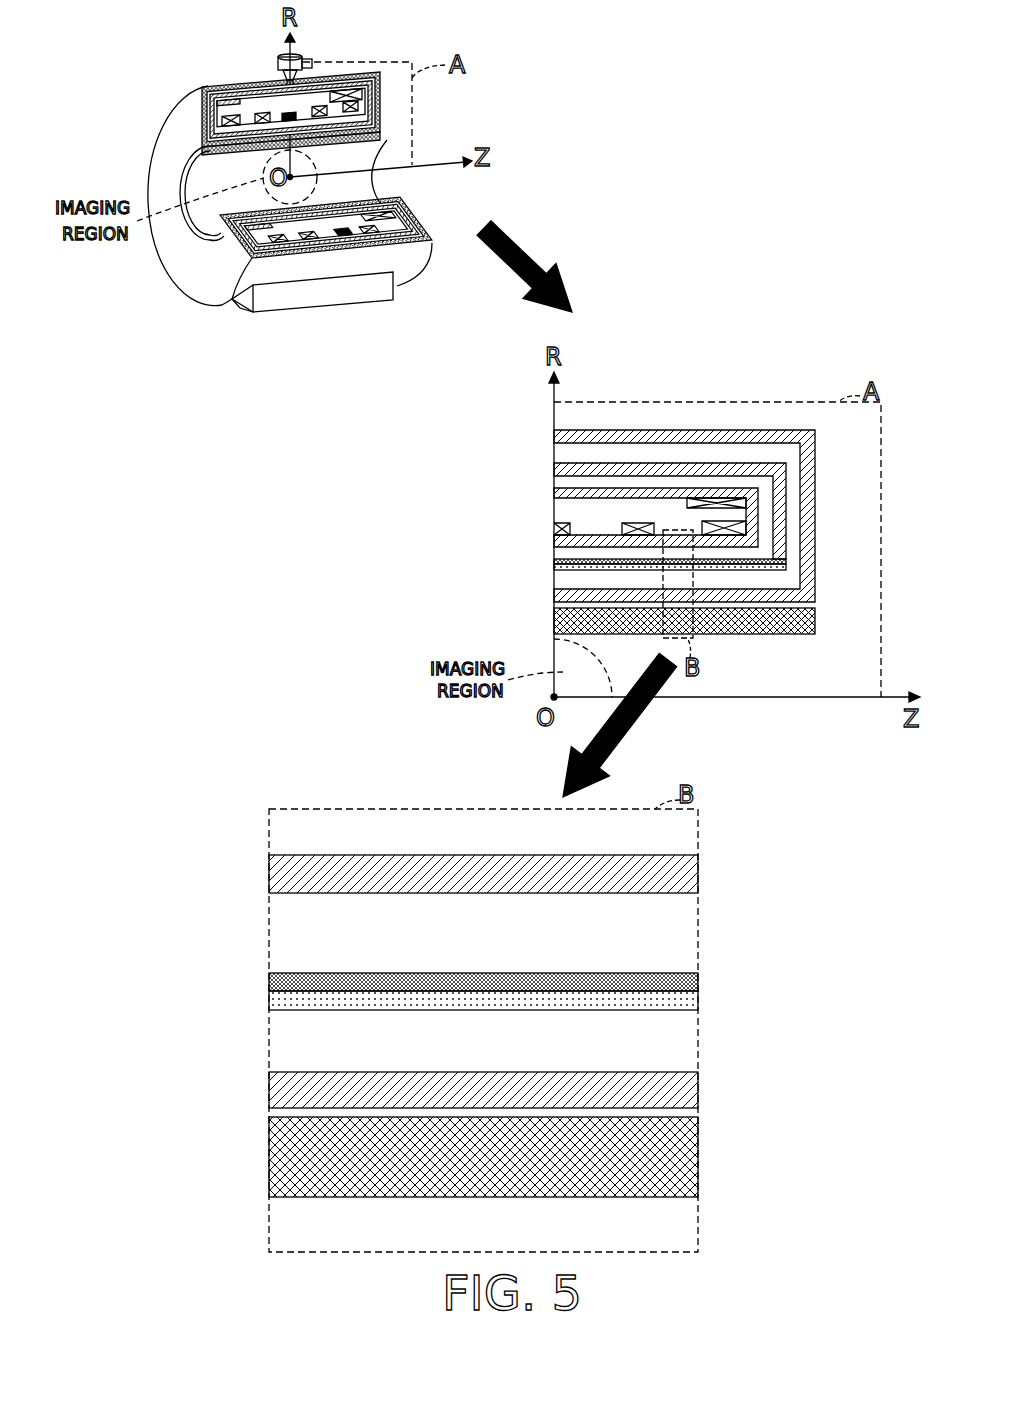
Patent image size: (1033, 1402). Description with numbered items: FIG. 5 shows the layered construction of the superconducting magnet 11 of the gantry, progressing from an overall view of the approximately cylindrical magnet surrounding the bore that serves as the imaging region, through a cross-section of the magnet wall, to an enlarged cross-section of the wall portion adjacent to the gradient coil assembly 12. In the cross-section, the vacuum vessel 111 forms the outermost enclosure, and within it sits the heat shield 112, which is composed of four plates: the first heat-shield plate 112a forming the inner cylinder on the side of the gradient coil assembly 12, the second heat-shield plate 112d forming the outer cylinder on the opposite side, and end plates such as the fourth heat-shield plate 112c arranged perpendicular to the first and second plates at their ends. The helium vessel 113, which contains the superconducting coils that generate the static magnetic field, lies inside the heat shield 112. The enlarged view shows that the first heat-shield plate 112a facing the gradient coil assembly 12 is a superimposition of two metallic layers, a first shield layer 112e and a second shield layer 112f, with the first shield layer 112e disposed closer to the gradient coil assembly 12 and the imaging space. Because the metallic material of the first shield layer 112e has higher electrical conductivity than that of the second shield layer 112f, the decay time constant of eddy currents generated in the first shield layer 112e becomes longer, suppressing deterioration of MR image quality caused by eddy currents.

The superconducting magnet 11 is at (435, 93).
The gradient coil assembly 12 is at (381, 137).
The vacuum vessel 111 is at (698, 1090).
The heat shield 112 is at (574, 691).
The first heat-shield plate 112a is at (564, 778).
The fourth heat-shield plate 112c is at (760, 490).
The second heat-shield plate 112d is at (654, 463).
The first shield layer 112e is at (787, 567).
The second shield layer 112f is at (787, 561).
The helium vessel 113 is at (698, 872).